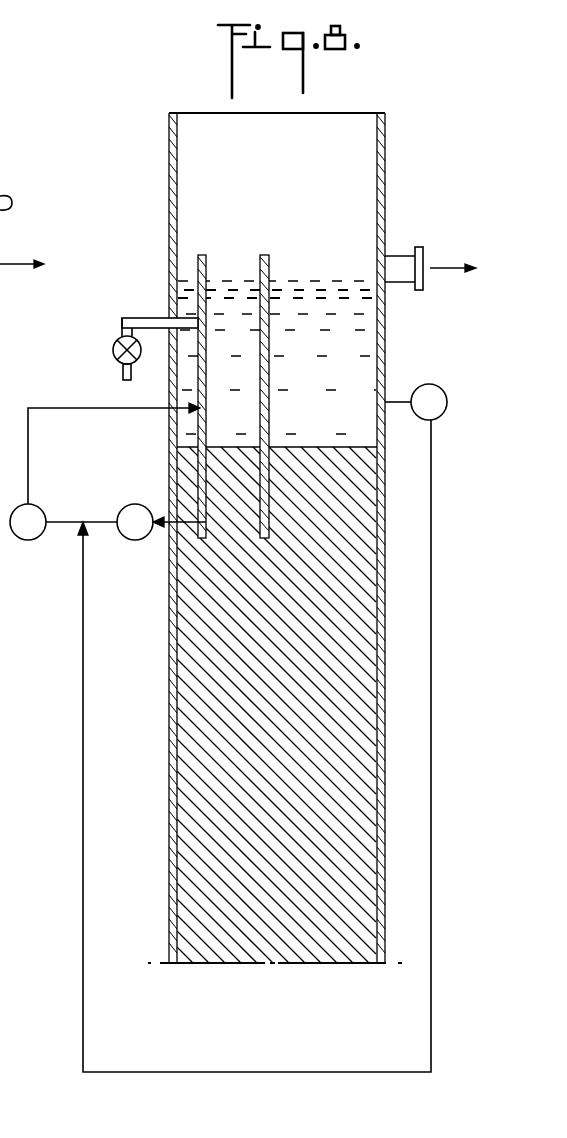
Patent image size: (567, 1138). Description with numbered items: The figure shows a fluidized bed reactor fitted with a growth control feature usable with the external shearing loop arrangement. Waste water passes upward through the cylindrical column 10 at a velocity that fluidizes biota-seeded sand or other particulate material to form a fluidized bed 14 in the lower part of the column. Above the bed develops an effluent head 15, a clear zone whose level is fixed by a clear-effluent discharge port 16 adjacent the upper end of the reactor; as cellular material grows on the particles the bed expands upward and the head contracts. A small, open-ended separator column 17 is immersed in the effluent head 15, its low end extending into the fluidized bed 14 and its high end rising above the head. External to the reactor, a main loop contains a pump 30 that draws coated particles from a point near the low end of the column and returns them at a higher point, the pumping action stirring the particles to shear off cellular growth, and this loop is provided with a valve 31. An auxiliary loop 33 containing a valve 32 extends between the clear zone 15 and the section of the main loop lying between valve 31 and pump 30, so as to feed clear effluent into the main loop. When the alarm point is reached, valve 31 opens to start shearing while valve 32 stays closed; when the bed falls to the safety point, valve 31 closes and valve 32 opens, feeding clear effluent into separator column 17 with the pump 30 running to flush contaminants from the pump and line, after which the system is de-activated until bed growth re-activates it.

The cylindrical column 10 is at (385, 170).
The fluidized bed 14 is at (200, 642).
The effluent head 15 is at (320, 280).
The clear-effluent discharge port 16 is at (398, 284).
The separator column 17 is at (270, 258).
The pump 30 is at (35, 540).
The valve 31 is at (136, 504).
The valve 32 is at (426, 384).
The auxiliary loop 33 is at (88, 745).